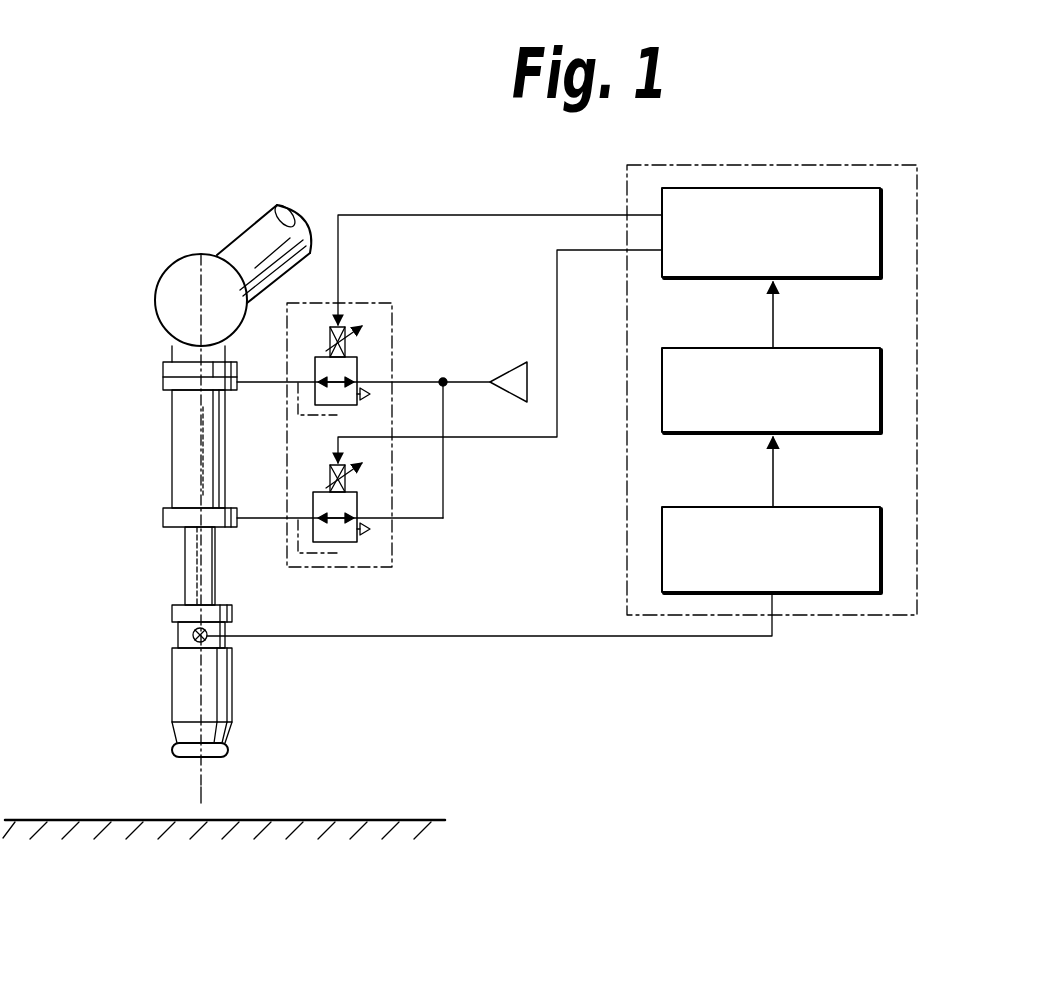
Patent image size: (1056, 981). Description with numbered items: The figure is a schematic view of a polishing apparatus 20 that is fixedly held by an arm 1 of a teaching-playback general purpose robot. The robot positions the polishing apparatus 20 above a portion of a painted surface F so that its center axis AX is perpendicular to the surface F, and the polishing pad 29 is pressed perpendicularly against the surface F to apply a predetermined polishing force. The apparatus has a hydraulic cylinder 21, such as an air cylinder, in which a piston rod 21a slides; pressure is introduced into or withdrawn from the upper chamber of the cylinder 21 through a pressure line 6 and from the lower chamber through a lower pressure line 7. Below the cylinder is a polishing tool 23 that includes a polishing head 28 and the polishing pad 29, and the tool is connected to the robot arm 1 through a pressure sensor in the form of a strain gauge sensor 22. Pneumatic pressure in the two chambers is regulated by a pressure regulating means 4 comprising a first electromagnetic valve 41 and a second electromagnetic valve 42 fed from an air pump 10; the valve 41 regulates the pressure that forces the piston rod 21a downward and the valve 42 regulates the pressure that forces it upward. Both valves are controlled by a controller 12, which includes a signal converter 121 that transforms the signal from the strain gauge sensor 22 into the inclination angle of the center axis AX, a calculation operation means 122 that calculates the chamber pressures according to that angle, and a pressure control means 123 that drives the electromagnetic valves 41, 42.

The arm 1 is at (255, 218).
The pressure regulating means 4 is at (387, 408).
The pressure line 6 is at (260, 381).
The lower pressure line 7 is at (432, 518).
The air pump 10 is at (510, 367).
The controller 12 is at (834, 390).
The polishing apparatus 20 is at (193, 548).
The hydraulic cylinder 21 is at (172, 442).
The piston rod 21a is at (186, 573).
The strain gauge sensor 22 is at (178, 636).
The polishing tool 23 is at (193, 704).
The polishing head 28 is at (217, 687).
The polishing pad 29 is at (228, 750).
The first electromagnetic valve 41 is at (357, 361).
The second electromagnetic valve 42 is at (357, 543).
The signal converter 121 is at (881, 562).
The calculation operation means 122 is at (881, 380).
The pressure control means 123 is at (881, 230).
The center axis AX is at (200, 788).
The surface F is at (366, 816).